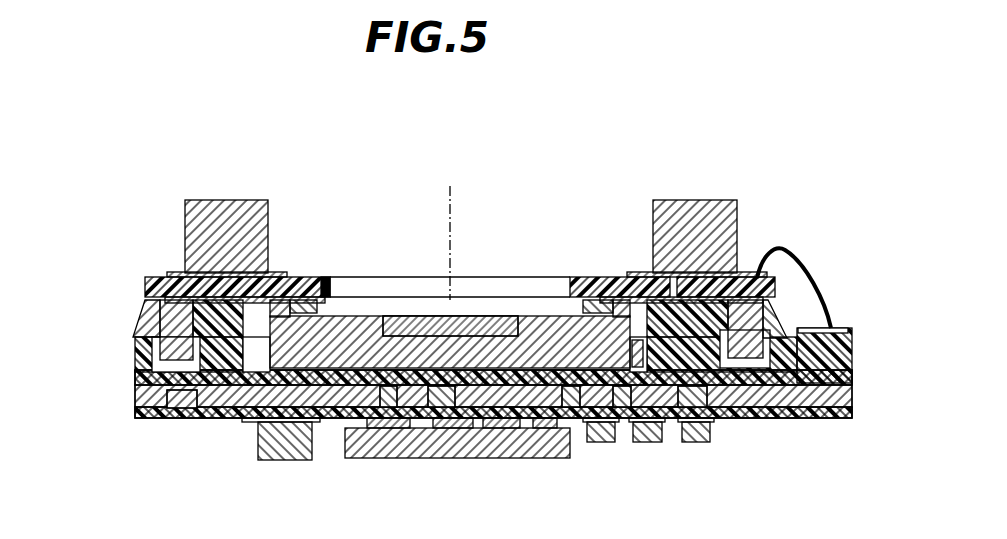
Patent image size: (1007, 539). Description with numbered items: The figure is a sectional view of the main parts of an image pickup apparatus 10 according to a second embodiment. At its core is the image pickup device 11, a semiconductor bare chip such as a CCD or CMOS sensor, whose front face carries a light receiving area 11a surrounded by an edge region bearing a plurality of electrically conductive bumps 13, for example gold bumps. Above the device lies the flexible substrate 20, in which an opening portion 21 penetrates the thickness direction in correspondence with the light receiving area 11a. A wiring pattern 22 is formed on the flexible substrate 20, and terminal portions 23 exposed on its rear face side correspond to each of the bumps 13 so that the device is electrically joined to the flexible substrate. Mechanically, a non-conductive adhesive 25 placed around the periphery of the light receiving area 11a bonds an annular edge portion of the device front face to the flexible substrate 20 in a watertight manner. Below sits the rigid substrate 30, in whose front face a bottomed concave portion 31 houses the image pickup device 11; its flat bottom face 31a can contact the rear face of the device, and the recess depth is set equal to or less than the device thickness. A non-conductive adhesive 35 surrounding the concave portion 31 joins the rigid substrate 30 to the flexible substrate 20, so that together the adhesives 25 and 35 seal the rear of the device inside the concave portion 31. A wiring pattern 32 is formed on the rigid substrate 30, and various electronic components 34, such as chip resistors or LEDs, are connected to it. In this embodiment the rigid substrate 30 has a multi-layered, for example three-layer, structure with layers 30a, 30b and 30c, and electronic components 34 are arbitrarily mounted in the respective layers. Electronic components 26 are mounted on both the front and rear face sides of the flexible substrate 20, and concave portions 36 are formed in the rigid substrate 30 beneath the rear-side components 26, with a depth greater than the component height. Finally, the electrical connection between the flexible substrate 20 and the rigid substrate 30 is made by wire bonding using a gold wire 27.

The image pickup apparatus 10 is at (512, 165).
The image pickup device 11 is at (393, 312).
The light receiving area 11a is at (487, 313).
The electrically conductive bumps 13 is at (298, 297).
The flexible substrate 20 is at (322, 272).
The opening portion 21 is at (562, 296).
The wiring pattern 22 is at (272, 275).
The terminal portions 23 is at (315, 306).
The non-conductive adhesive 25 is at (320, 302).
The electronic components 26 is at (232, 200).
The gold wire 27 is at (798, 258).
The rigid substrate 30 is at (160, 425).
The layer 30a is at (137, 375).
The layer 30b is at (137, 398).
The layer 30c is at (135, 416).
The concave portion 31 is at (621, 408).
The bottom face 31a is at (573, 408).
The wiring pattern 32 is at (320, 423).
The electronic components 34 is at (177, 416).
The non-conductive adhesive 35 is at (148, 305).
The concave portions 36 is at (155, 340).